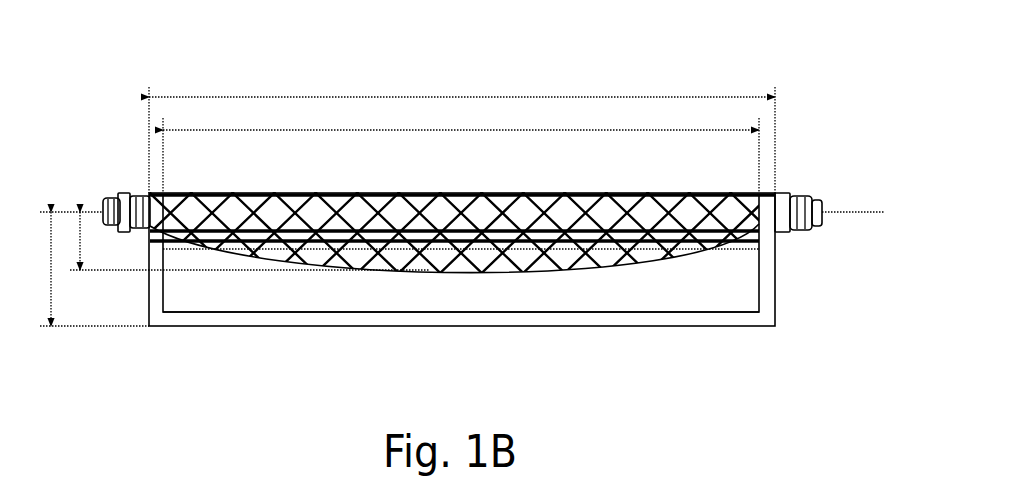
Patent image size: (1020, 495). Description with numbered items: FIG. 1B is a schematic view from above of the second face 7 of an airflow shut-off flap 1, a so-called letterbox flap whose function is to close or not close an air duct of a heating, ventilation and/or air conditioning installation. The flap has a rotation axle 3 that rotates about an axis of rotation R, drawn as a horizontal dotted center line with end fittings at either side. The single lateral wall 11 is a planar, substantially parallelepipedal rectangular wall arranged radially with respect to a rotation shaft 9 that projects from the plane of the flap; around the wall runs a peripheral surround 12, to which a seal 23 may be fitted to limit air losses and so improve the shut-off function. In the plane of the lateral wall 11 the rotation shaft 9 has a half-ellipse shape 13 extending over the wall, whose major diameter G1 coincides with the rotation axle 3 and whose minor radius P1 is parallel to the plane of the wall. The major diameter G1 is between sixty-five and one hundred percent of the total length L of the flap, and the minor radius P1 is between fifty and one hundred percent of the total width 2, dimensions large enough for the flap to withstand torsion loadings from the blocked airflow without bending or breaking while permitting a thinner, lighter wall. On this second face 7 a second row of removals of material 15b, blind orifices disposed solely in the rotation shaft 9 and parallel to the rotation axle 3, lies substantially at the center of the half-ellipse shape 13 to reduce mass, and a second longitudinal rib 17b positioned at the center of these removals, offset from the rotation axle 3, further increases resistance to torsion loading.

The airflow shut-off flap 1 is at (799, 70).
The rotation axle 3 is at (787, 194).
The second face 7 is at (779, 282).
The rotation shaft 9 is at (701, 270).
The lateral wall 11 is at (652, 293).
The peripheral surround 12 is at (560, 313).
The half-ellipse shape 13 is at (442, 272).
The second row of removals of material 15b is at (340, 252).
The second longitudinal rib 17b is at (264, 252).
The seal 23 is at (567, 193).
The total length L is at (462, 134).
The major diameter G1 is at (461, 153).
The axis of rotation R is at (845, 211).
The total width 2 is at (91, 269).
The minor radius P1 is at (243, 241).